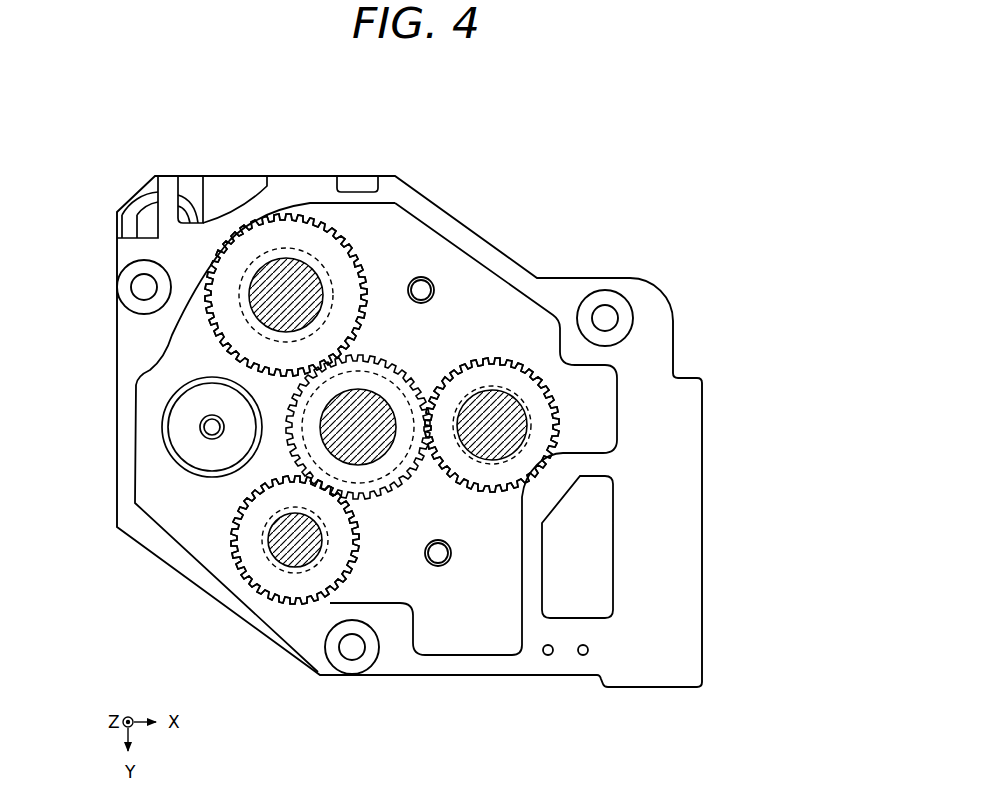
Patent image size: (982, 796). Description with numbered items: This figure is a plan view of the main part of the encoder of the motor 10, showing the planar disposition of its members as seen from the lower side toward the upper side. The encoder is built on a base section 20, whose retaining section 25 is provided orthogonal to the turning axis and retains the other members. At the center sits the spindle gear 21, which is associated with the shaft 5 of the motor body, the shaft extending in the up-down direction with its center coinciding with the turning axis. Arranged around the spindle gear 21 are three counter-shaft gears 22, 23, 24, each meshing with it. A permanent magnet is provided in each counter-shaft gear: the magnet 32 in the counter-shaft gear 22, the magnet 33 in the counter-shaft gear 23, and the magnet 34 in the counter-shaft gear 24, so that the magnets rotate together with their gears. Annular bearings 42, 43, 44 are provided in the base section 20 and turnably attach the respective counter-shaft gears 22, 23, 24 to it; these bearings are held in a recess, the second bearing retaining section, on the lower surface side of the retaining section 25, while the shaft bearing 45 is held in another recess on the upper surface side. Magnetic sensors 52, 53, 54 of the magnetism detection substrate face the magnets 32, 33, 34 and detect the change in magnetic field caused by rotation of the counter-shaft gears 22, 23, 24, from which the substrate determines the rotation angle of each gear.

The motor 10 is at (569, 175).
The base section 20 is at (681, 294).
The retaining section 25 is at (506, 630).
The spindle gear 21 is at (380, 357).
The counter-shaft gear 22 is at (503, 367).
The counter-shaft gear 23 is at (282, 606).
The counter-shaft gear 24 is at (300, 214).
The shaft 5 is at (370, 456).
The magnet 32 is at (525, 408).
The magnet 33 is at (297, 566).
The magnet 34 is at (262, 310).
The bearing 42 is at (540, 470).
The bearing 43 is at (232, 546).
The bearing 44 is at (232, 240).
The shaft bearing 45 is at (408, 400).
The magnetic sensor 52 is at (470, 458).
The magnetic sensor 53 is at (327, 553).
The magnetic sensor 54 is at (333, 278).